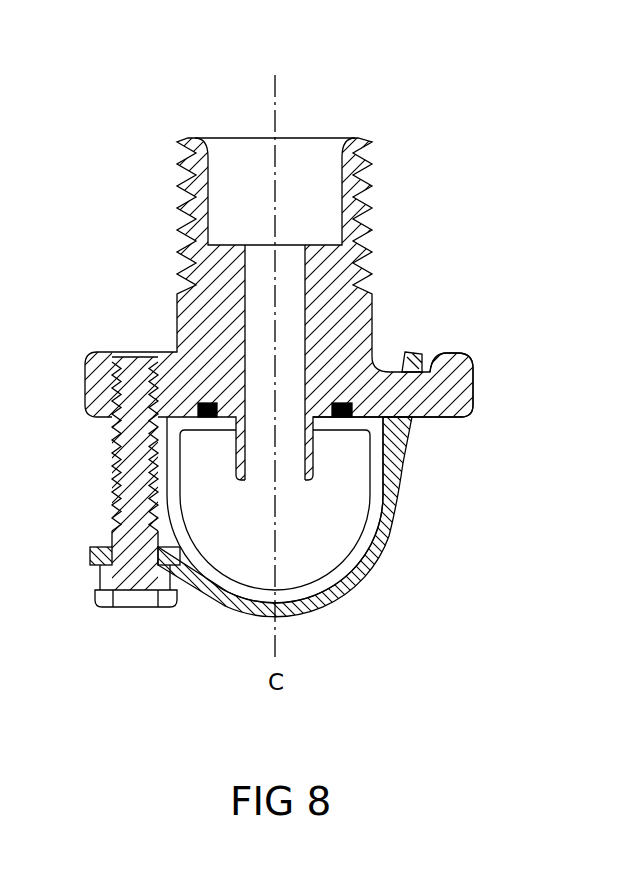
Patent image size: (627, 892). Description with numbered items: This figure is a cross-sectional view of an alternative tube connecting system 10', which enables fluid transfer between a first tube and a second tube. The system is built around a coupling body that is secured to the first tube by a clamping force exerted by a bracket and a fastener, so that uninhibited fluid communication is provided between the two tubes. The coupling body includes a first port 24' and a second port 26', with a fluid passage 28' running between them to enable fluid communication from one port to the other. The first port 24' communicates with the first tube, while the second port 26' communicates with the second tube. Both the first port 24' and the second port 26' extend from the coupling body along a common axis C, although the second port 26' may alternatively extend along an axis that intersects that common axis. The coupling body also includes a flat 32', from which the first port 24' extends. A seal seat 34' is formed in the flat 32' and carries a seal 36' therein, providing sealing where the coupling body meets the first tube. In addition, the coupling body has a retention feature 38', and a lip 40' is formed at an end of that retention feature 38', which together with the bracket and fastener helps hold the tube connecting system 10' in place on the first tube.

The tube connecting system 10' is at (352, 309).
The first port 24' is at (273, 557).
The second port 26' is at (339, 191).
The fluid passage 28' is at (364, 362).
The flat 32' is at (339, 517).
The seal seat 34' is at (450, 362).
The seal 36' is at (154, 338).
The retention feature 38' is at (461, 487).
The lip 40' is at (510, 384).